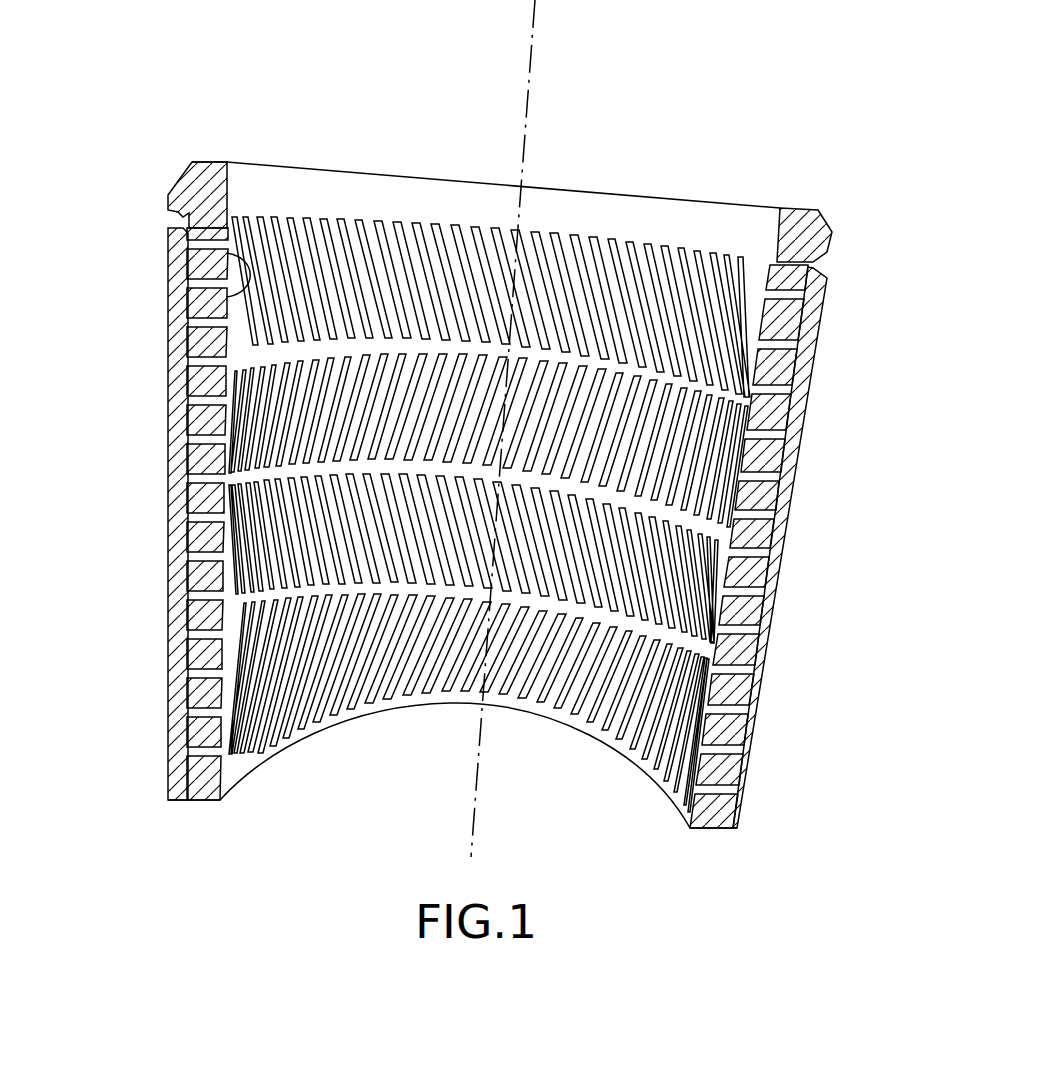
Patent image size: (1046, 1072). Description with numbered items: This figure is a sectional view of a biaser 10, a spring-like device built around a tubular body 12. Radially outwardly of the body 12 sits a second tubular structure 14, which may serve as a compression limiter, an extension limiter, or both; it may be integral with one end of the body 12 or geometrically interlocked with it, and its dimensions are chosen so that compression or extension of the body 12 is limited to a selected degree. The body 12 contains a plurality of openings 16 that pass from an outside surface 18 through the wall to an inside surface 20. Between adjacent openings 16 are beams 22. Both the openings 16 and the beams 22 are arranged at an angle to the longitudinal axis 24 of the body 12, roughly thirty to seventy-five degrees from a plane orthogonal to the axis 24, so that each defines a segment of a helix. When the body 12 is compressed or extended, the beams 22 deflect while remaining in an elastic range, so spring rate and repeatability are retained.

The biaser 10 is at (123, 150).
The tubular body 12 is at (703, 227).
The second tubular structure 14 is at (783, 502).
The openings 16 is at (365, 237).
The outside surface 18 is at (187, 295).
The inside surface 20 is at (227, 253).
The beams 22 is at (415, 238).
The longitudinal axis 24 is at (535, 15).